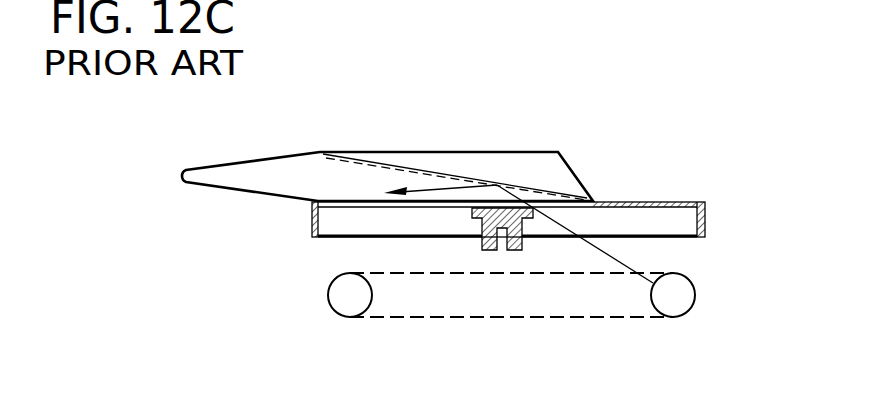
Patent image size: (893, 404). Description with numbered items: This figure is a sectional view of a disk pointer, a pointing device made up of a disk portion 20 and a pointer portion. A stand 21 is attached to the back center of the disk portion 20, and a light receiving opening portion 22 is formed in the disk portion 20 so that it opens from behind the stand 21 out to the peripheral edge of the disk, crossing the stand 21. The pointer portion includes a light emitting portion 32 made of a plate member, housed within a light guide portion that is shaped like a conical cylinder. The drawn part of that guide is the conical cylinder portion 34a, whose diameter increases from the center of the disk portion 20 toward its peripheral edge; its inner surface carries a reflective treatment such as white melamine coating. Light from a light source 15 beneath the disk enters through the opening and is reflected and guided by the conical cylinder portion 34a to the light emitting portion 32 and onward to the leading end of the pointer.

The light source 15 is at (680, 305).
The disk portion 20 is at (683, 202).
The stand 21 is at (522, 250).
The light receiving opening portion 22 is at (382, 206).
The light emitting portion 32 is at (530, 165).
The conical cylinder portion 34a is at (285, 187).